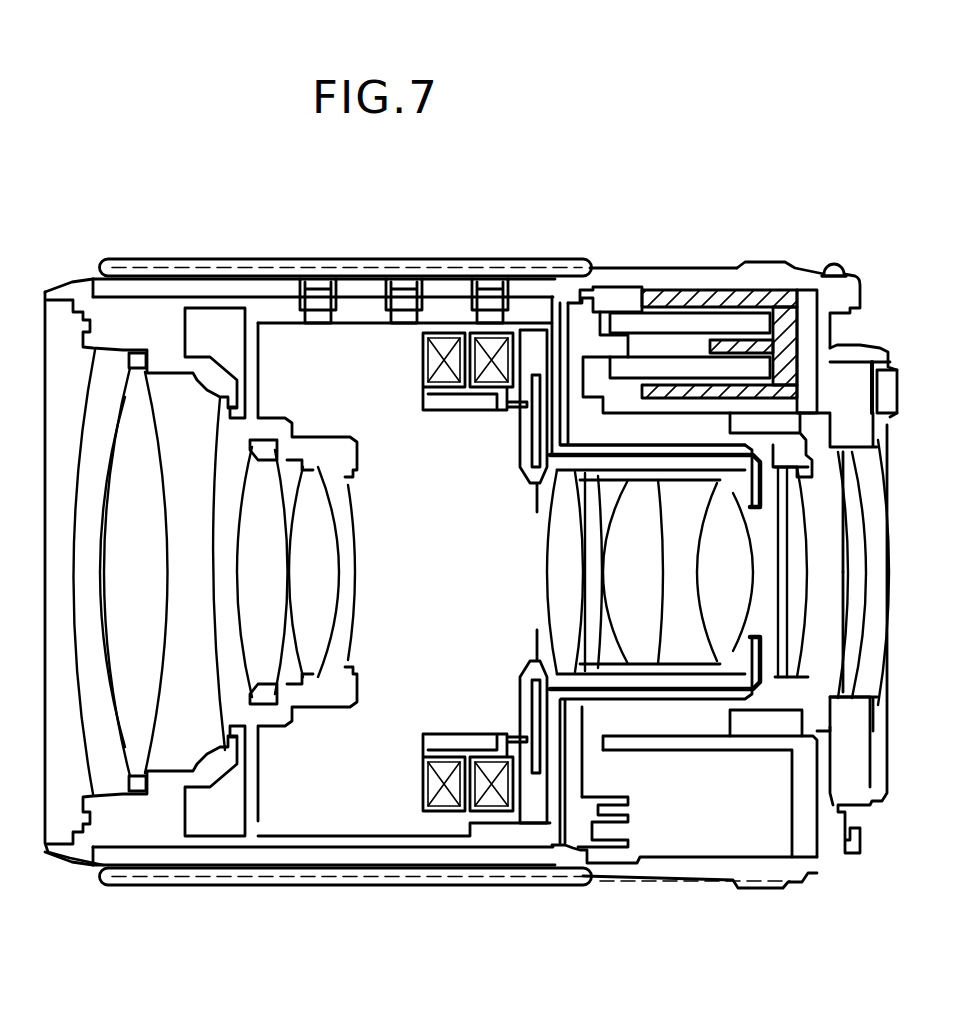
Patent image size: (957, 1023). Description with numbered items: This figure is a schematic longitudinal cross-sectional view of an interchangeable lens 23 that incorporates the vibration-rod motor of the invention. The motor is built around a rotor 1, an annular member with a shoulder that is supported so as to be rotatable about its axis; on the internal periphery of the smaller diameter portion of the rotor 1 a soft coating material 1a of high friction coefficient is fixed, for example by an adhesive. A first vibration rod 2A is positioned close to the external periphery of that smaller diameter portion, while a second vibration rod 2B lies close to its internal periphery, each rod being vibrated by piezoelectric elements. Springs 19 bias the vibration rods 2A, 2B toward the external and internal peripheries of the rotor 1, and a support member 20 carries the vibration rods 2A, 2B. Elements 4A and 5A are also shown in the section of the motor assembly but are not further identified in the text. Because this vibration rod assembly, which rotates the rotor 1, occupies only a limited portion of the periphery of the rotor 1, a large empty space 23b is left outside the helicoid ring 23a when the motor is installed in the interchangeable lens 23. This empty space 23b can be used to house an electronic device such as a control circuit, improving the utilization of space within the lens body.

The rotor 1 is at (580, 322).
The soft coating material 1a is at (620, 320).
The first vibration rod 2A is at (618, 318).
The springs 19 is at (660, 340).
The outer yoke 4A is at (703, 313).
The support member 20 is at (740, 323).
The inner yoke 5A is at (747, 370).
The second vibration rod 2B is at (778, 305).
The interchangeable lens 23 is at (823, 263).
The helicoid ring 23a is at (603, 450).
The empty space 23b is at (697, 833).